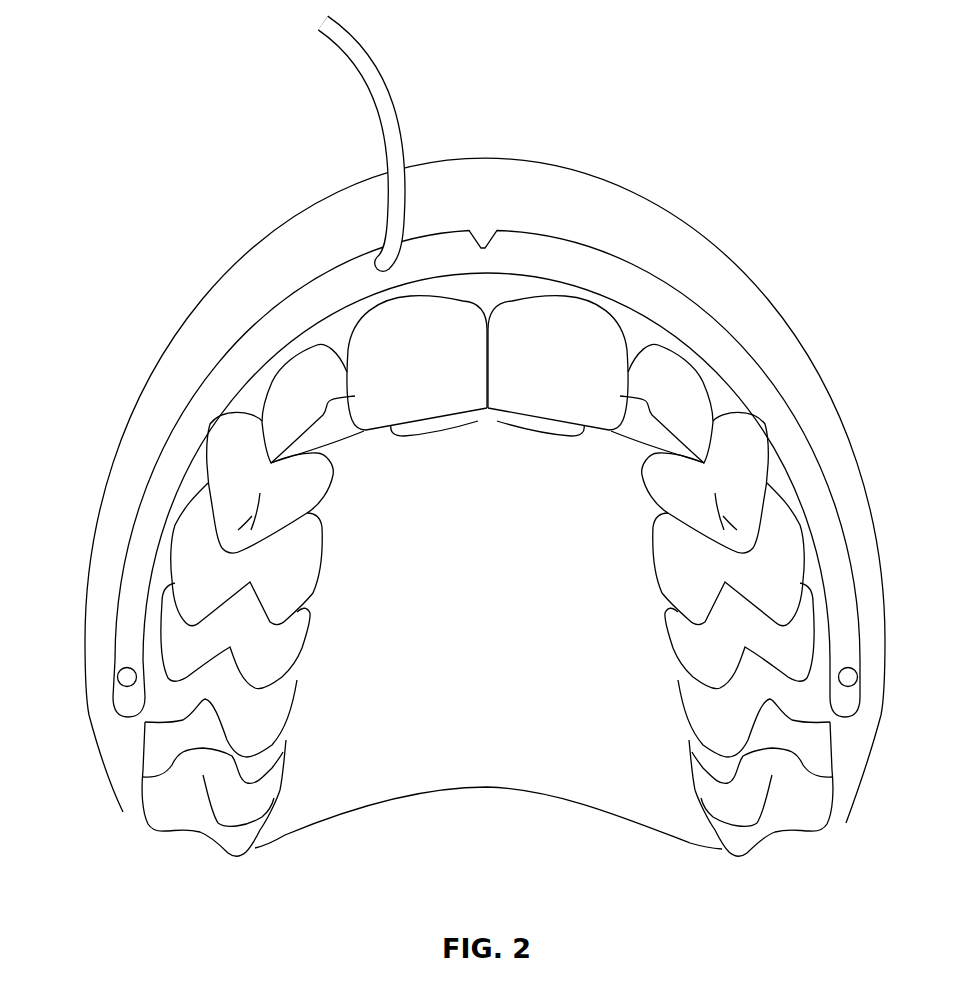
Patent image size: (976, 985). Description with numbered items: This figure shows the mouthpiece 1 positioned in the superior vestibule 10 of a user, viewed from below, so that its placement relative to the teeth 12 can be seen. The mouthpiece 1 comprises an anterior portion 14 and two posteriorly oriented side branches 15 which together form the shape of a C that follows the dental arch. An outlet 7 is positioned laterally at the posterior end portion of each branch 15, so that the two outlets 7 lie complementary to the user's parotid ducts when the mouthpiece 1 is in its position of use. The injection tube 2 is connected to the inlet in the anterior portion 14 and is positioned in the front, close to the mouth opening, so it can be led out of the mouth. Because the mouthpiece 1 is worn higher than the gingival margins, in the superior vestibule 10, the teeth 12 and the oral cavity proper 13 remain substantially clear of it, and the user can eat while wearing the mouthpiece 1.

The mouthpiece 1 is at (247, 282).
The injection tube 2 is at (382, 110).
The outlet 7 is at (127, 677).
The superior vestibule 10 is at (860, 757).
The teeth 12 is at (182, 876).
The oral cavity proper 13 is at (484, 762).
The anterior portion 14 is at (548, 252).
The side branch 15 is at (137, 597).